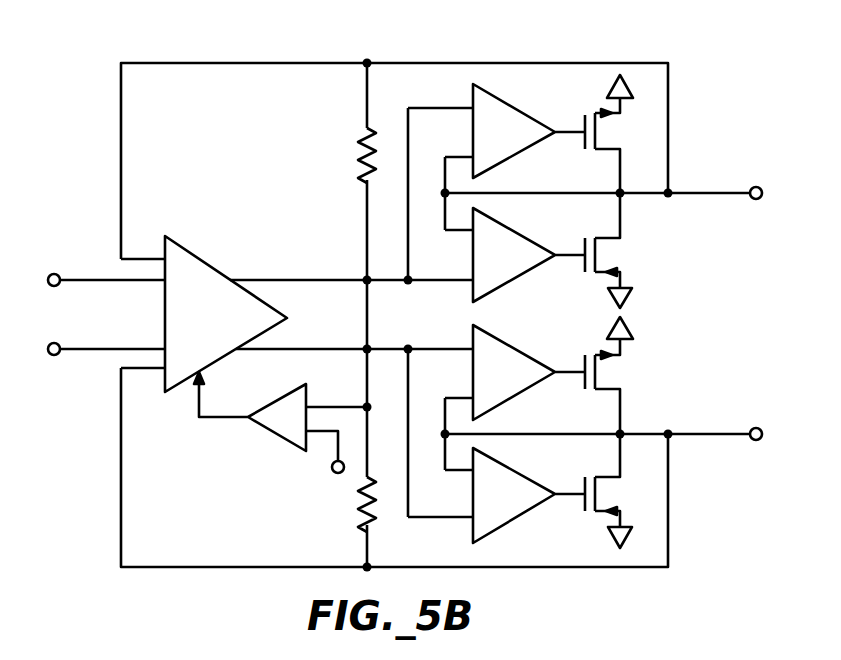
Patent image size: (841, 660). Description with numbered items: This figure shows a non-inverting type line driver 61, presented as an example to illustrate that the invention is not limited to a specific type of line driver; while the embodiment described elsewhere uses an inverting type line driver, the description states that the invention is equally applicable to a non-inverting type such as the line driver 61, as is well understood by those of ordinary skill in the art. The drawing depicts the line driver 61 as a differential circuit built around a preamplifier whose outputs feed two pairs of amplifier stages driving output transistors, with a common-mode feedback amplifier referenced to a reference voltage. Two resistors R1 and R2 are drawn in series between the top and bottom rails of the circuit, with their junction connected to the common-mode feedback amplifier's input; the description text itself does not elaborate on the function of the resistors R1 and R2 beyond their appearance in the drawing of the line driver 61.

The line driver 61 is at (411, 293).
The feedback resistor R1 is at (350, 155).
The feedback resistor R2 is at (350, 504).